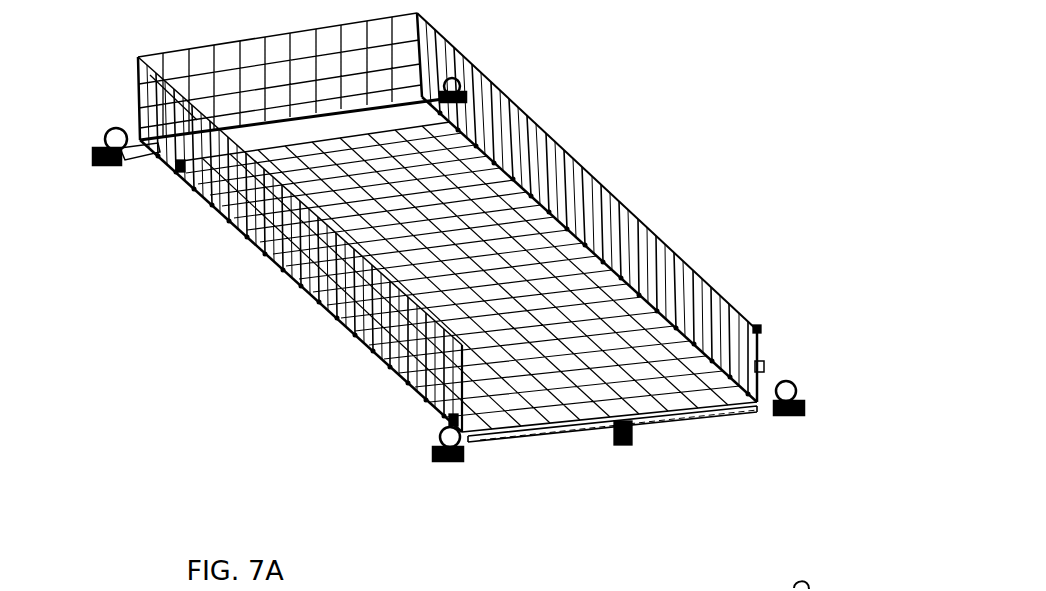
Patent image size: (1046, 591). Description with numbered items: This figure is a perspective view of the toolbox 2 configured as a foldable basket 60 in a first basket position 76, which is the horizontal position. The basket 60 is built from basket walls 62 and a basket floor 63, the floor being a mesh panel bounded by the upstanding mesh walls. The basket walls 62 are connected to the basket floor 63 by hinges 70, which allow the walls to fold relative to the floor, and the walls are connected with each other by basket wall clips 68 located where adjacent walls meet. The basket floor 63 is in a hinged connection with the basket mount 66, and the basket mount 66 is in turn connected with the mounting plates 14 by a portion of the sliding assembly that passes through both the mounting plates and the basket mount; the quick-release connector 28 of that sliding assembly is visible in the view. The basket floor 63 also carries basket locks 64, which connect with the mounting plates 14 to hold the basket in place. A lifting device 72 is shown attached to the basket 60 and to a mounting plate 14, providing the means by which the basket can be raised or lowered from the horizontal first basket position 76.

The toolbox 2 is at (672, 58).
The mounting plate 14 is at (138, 160).
The quick-release connector 28 is at (430, 440).
The foldable basket 60 is at (592, 115).
The basket wall 62 is at (373, 318).
The basket floor 63 is at (567, 295).
The basket lock 64 is at (181, 167).
The basket mount 66 is at (762, 367).
The basket wall clip 68 is at (758, 328).
The hinge 70 is at (393, 365).
The lifting device 72 is at (730, 425).
The first basket position 76 is at (110, 330).